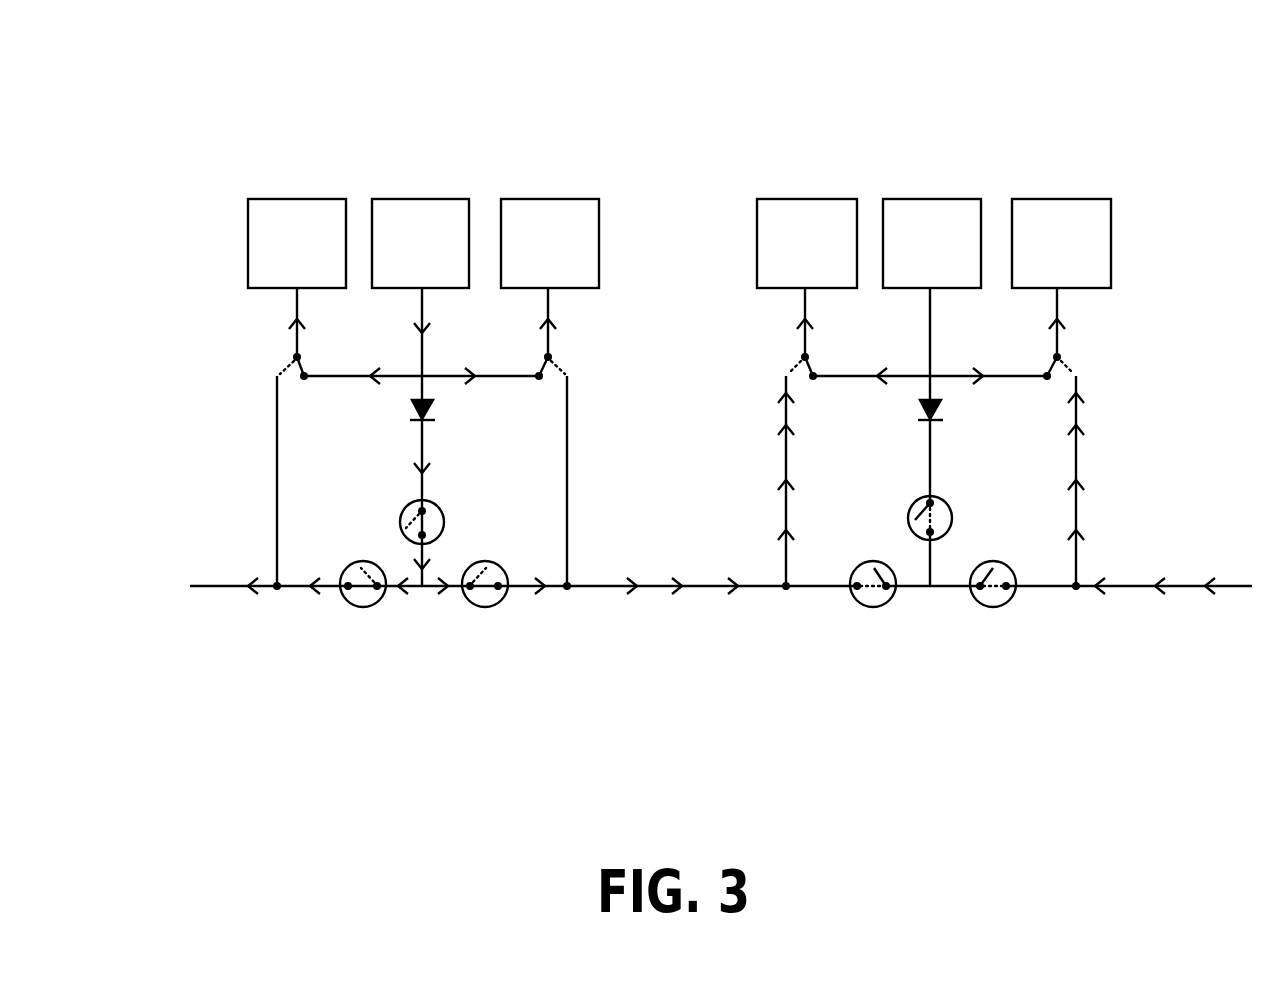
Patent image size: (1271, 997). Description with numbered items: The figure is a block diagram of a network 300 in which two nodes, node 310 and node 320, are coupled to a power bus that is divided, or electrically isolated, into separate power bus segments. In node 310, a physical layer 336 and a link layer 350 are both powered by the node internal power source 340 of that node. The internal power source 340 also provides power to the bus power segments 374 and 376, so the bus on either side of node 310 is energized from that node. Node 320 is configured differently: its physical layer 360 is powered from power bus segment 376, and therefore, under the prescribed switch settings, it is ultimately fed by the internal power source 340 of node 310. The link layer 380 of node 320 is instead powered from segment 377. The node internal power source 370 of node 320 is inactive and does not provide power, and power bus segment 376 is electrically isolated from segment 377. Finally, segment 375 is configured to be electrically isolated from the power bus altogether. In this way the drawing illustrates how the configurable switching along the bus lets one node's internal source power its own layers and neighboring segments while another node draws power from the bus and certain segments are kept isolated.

The bus network system 300 is at (727, 414).
The node 310 is at (261, 127).
The node 320 is at (1105, 127).
The physical layer 336 is at (285, 199).
The node internal power source 340 is at (410, 199).
The link layer 350 is at (533, 199).
The physical layer 360 is at (793, 199).
The node source 370 is at (920, 199).
The link layer 380 is at (1043, 199).
The bus power segment 374 is at (201, 607).
The segment 375 is at (460, 607).
The power bus segment 376 is at (500, 607).
The segment 377 is at (1265, 607).